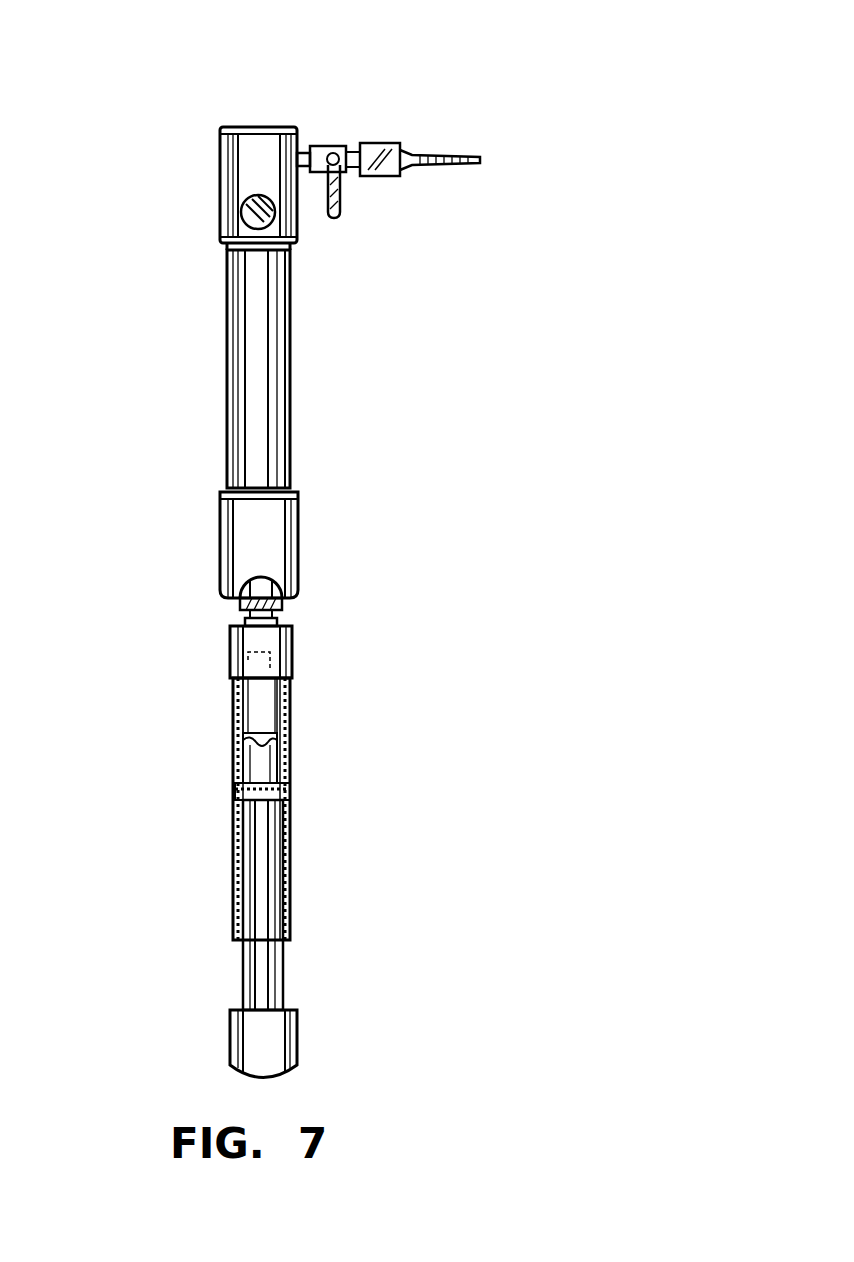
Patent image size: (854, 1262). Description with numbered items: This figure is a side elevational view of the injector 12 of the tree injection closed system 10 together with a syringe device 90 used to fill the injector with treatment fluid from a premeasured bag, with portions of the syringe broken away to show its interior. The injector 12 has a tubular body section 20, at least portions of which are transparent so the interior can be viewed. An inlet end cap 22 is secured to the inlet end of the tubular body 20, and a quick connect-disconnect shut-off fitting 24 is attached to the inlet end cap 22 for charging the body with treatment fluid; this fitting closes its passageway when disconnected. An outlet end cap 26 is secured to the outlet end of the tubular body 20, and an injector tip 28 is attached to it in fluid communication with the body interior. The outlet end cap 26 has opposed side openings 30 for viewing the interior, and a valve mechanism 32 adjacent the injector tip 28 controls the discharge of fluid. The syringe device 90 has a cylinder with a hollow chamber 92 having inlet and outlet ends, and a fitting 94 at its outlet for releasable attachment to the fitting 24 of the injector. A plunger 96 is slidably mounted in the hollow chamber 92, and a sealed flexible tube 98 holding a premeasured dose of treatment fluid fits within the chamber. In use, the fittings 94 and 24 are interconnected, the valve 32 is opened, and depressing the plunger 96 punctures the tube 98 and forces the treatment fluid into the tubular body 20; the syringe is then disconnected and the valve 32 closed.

The tree injection closed system 10 is at (440, 455).
The injector 12 is at (310, 328).
The tubular body section 20 is at (227, 438).
The inlet end cap 22 is at (220, 547).
The quick connect-disconnect shut-off fitting 24 is at (272, 575).
The outlet end cap 26 is at (222, 199).
The injector tip 28 is at (445, 155).
The opposed side openings 30 is at (246, 224).
The valve mechanism 32 is at (340, 150).
The syringe device 90 is at (310, 861).
The hollow chamber 92 is at (282, 767).
The fitting 94 is at (337, 619).
The plunger 96 is at (262, 988).
The sealed flexible tube 98 is at (278, 718).